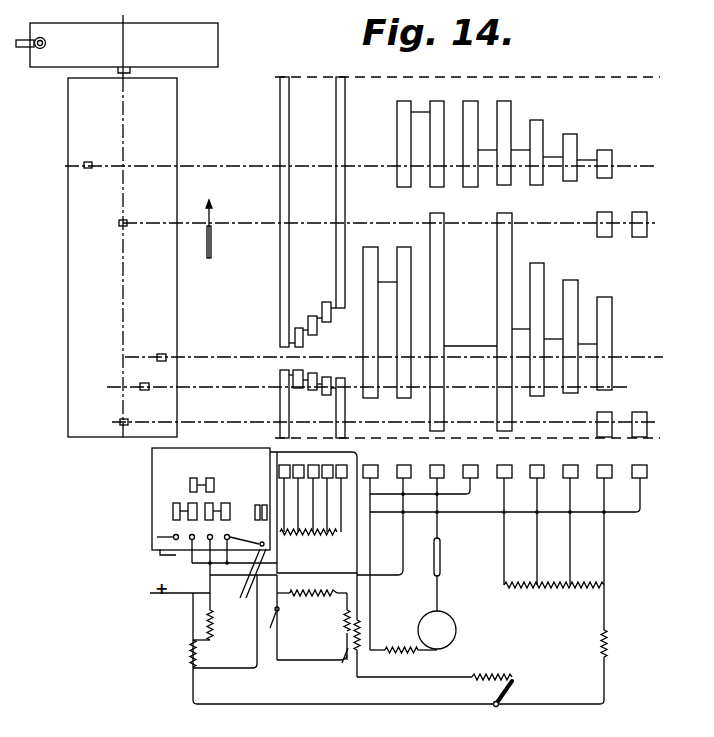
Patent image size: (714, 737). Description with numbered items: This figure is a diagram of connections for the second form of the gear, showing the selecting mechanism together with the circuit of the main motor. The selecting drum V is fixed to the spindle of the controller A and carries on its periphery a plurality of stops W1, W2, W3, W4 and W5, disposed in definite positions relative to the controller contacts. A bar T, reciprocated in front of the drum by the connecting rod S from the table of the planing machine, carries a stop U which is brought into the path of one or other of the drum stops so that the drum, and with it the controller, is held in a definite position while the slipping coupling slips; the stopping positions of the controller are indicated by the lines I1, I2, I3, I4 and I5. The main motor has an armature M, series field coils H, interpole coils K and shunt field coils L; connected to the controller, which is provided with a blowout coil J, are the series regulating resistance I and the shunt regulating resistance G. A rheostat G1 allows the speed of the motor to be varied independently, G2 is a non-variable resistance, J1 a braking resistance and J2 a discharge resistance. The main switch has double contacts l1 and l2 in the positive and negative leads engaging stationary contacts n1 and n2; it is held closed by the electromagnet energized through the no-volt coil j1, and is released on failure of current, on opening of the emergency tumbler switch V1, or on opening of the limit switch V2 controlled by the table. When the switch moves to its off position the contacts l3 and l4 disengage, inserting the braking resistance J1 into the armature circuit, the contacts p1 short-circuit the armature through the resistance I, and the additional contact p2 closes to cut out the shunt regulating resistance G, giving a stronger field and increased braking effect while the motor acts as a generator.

The bar T is at (124, 226).
The connecting rod S is at (23, 47).
The stop U is at (130, 73).
The selecting drum V is at (68, 440).
The stop W1 is at (99, 152).
The stop W2 is at (143, 212).
The stop W3 is at (150, 347).
The stop W4 is at (140, 386).
The stop W5 is at (102, 416).
The stopping position line I1 is at (375, 176).
The stopping position line I2 is at (404, 231).
The stopping position line I3 is at (406, 366).
The stopping position line I4 is at (386, 396).
The stopping position line I5 is at (395, 431).
The controller A is at (467, 257).
The shunt regulating resistance G is at (313, 513).
The contact l4 is at (306, 535).
The blowout coil J is at (441, 555).
The armature M is at (437, 612).
The interpole coils K is at (403, 638).
The shunt field coils L is at (362, 628).
The series regulating resistance I is at (554, 602).
The series field coils H is at (608, 647).
The rheostat G1 is at (484, 666).
The discharge resistance J2 is at (216, 614).
The braking resistance J1 is at (190, 652).
The contact l3 is at (247, 584).
The limit switch V2 is at (275, 619).
The non-variable resistance G2 is at (322, 607).
The no-volt coil j1 is at (313, 639).
The tumbler switch V1 is at (342, 664).
The additional contact p2 is at (189, 478).
The contacts p1 is at (222, 470).
The double contacts l2 is at (190, 512).
The double contacts l1 is at (226, 512).
The stationary contacts n2 is at (172, 535).
The stationary contacts n1 is at (245, 520).